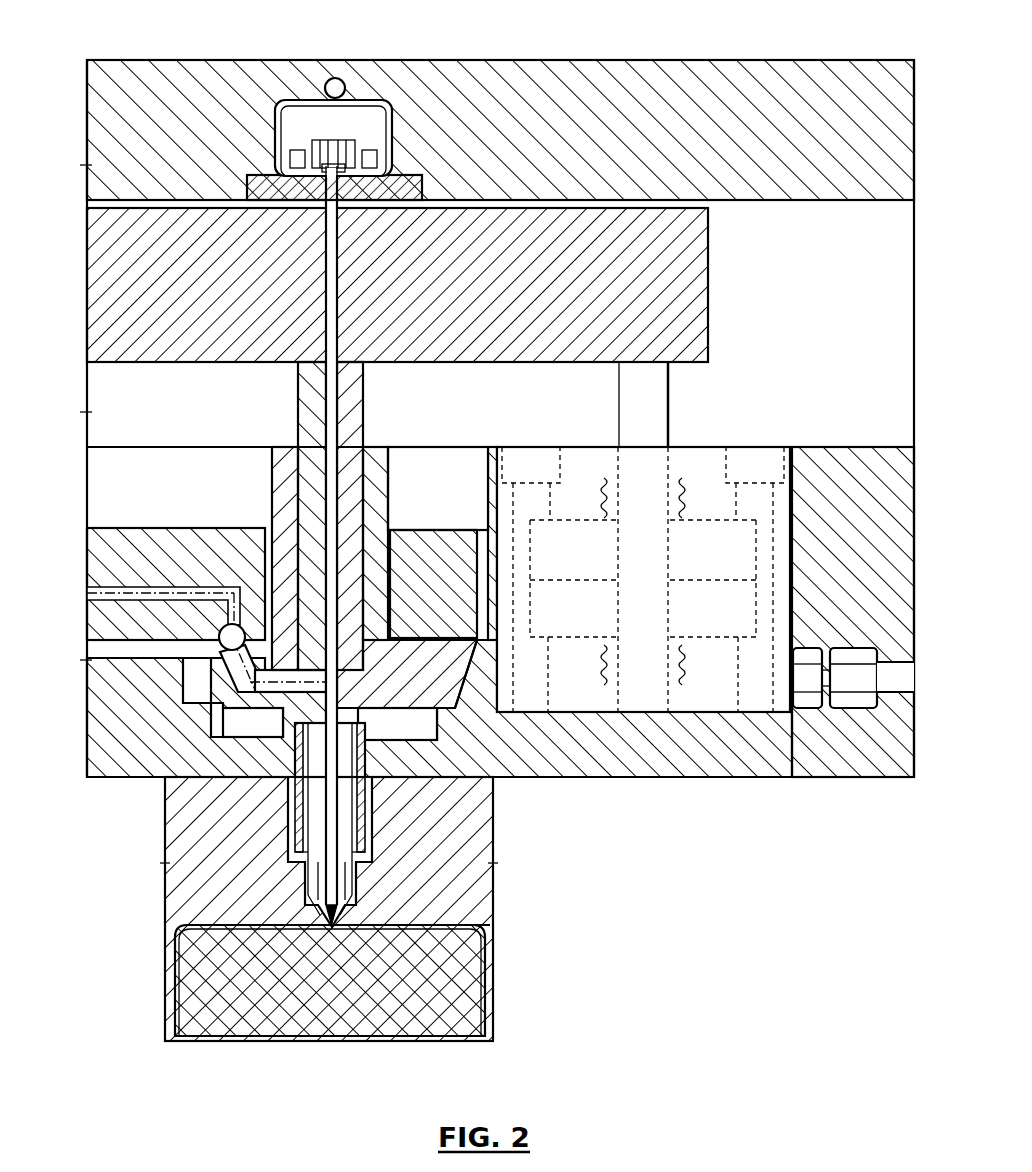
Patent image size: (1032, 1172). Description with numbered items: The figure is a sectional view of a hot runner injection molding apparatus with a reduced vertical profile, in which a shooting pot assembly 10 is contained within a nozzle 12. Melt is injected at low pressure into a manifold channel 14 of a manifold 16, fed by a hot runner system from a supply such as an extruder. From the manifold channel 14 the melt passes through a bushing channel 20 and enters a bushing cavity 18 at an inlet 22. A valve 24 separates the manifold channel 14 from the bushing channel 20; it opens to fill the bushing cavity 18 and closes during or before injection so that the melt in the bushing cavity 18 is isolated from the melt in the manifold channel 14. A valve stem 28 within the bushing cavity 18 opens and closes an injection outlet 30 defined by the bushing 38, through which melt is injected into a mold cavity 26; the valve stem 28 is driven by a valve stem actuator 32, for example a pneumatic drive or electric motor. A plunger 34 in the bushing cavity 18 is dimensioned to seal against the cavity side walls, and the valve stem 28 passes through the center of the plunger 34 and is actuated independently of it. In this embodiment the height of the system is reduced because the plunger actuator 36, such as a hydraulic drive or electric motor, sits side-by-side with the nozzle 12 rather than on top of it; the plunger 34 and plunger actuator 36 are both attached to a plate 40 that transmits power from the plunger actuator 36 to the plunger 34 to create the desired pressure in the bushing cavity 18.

The shooting pot assembly 10 is at (388, 565).
The nozzle 12 is at (285, 812).
The manifold channel 14 is at (88, 590).
The manifold 16 is at (110, 548).
The bushing cavity 18 is at (223, 727).
The bushing channel 20 is at (255, 692).
The inlet 22 is at (292, 722).
The valve 24 is at (225, 648).
The mold cavity 26 is at (175, 928).
The valve stem 28 is at (375, 625).
The injection outlet 30 is at (333, 927).
The valve stem actuator 32 is at (362, 130).
The plunger 34 is at (298, 378).
The plunger actuator 36 is at (722, 465).
The bushing 38 is at (422, 685).
The plate 40 is at (117, 283).